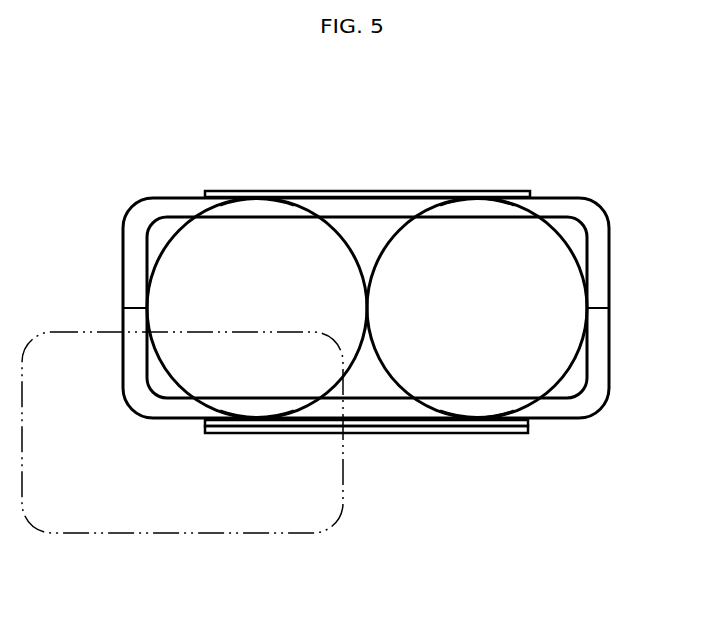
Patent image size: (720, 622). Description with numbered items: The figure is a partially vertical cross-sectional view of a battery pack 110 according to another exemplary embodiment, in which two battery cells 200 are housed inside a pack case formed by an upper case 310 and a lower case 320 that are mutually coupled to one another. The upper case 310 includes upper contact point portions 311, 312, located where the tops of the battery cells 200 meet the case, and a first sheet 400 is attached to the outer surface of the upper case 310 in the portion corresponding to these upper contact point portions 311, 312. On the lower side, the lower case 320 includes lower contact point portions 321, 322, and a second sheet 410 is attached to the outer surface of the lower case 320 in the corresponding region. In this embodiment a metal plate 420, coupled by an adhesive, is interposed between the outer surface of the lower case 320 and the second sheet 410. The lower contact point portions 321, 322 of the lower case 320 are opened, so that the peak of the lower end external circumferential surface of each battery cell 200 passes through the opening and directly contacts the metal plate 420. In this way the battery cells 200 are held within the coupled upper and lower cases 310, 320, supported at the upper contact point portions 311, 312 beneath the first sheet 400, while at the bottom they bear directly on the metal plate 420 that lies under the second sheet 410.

The battery module 110 is at (70, 94).
The battery cells 200 is at (170, 283).
The upper case 310 is at (160, 205).
The upper contact point portion 311 is at (255, 196).
The upper contact point portion 312 is at (478, 197).
The lower case 320 is at (160, 410).
The lower contact point portion 321 is at (253, 420).
The lower contact point portion 322 is at (478, 434).
The first sheet 400 is at (365, 191).
The second sheet 410 is at (443, 433).
The metal plate 420 is at (386, 426).